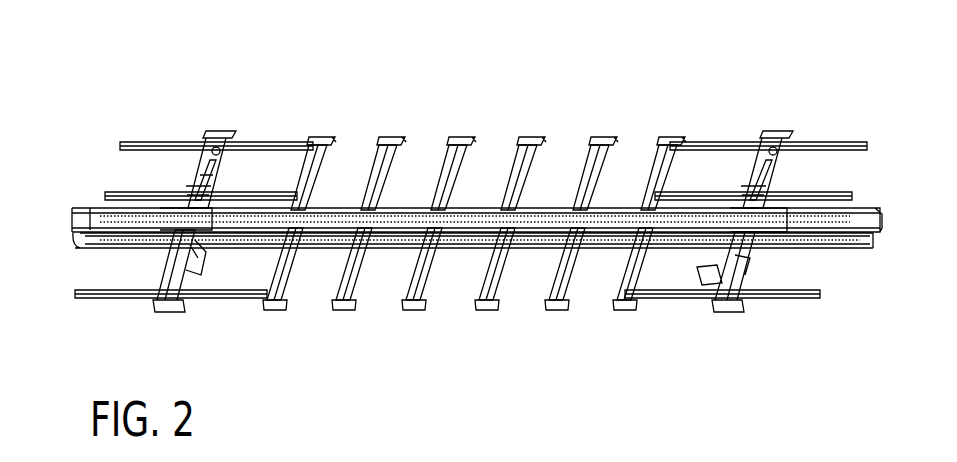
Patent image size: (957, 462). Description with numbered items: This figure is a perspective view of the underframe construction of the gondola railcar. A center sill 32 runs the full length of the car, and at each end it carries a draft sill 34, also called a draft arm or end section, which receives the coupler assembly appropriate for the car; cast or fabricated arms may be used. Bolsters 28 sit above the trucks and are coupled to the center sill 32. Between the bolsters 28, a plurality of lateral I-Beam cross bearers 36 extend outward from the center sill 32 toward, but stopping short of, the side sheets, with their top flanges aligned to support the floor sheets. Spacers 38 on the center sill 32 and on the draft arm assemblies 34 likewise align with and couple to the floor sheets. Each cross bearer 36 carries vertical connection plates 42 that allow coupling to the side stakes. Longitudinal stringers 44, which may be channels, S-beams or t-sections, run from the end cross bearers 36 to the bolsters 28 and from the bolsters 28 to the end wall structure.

The bolster 28 is at (182, 312).
The center sill 32 is at (470, 229).
The draft sill 34 is at (74, 244).
The lateral I-Beam cross bearer 36 is at (346, 160).
The spacer 38 is at (95, 206).
The vertical connection plate 42 is at (318, 136).
The longitudinal stringer 44 is at (160, 141).